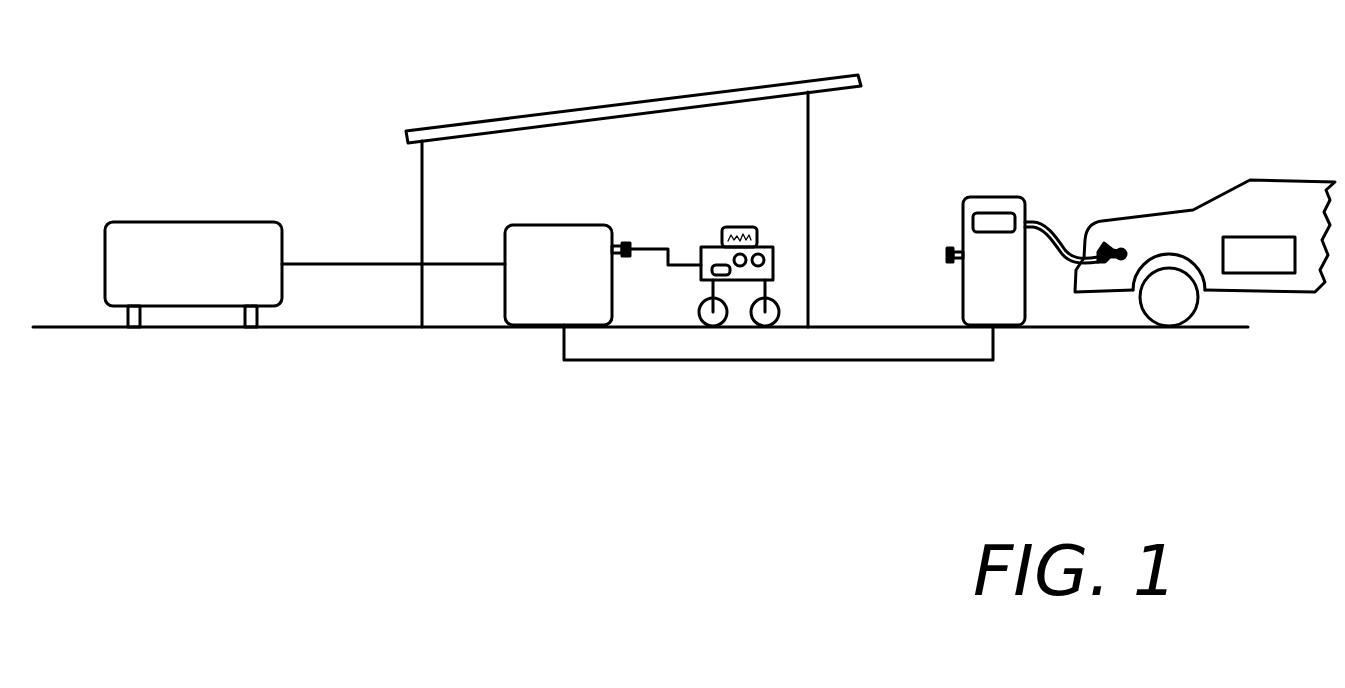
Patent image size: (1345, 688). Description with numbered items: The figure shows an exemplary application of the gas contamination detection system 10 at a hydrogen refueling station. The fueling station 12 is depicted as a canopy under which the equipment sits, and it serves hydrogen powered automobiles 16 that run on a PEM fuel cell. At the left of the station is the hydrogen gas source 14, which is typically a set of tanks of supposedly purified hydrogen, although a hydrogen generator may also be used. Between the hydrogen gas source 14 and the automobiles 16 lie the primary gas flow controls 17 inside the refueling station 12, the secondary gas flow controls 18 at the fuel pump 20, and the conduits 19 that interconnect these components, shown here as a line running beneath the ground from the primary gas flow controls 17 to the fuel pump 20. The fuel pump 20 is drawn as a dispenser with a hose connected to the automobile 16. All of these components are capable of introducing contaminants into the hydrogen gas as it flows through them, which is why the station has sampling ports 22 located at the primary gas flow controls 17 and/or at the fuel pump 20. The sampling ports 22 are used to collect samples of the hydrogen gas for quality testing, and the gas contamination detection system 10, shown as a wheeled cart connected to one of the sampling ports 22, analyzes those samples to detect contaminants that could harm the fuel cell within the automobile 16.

The gas contamination detection system 10 is at (707, 230).
The fueling station 12 is at (411, 110).
The hydrogen gas source 14 is at (178, 222).
The hydrogen powered automobiles 16 is at (1197, 208).
The primary gas flow controls 17 is at (566, 225).
The secondary gas flow controls 18 is at (978, 212).
The conduits 19 is at (851, 362).
The fuel pump 20 is at (963, 281).
The sampling ports 22 is at (624, 244).